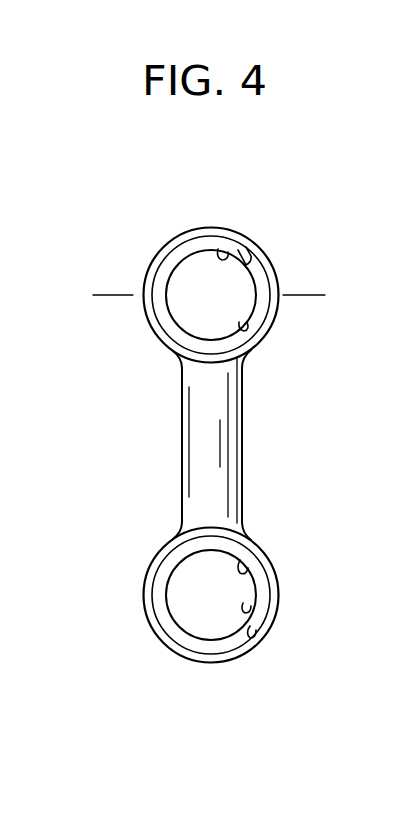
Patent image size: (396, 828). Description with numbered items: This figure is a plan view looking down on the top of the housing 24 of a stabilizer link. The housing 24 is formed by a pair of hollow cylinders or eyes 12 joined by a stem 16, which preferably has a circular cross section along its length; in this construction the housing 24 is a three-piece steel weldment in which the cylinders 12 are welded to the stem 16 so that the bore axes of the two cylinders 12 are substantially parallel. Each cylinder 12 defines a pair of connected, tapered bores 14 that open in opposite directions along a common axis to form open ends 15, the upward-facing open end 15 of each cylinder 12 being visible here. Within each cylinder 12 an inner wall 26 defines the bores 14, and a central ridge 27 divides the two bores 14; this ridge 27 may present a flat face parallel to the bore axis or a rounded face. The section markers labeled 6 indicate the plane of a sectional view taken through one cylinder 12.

The hollow cylinder 12 is at (163, 235).
The tapered bore 14 is at (220, 254).
The open end 15 is at (286, 318).
The stem 16 is at (188, 418).
The housing 24 is at (254, 434).
The inner wall 26 is at (247, 263).
The central ridge 27 is at (242, 326).
The section line 6- 6 is at (117, 307).